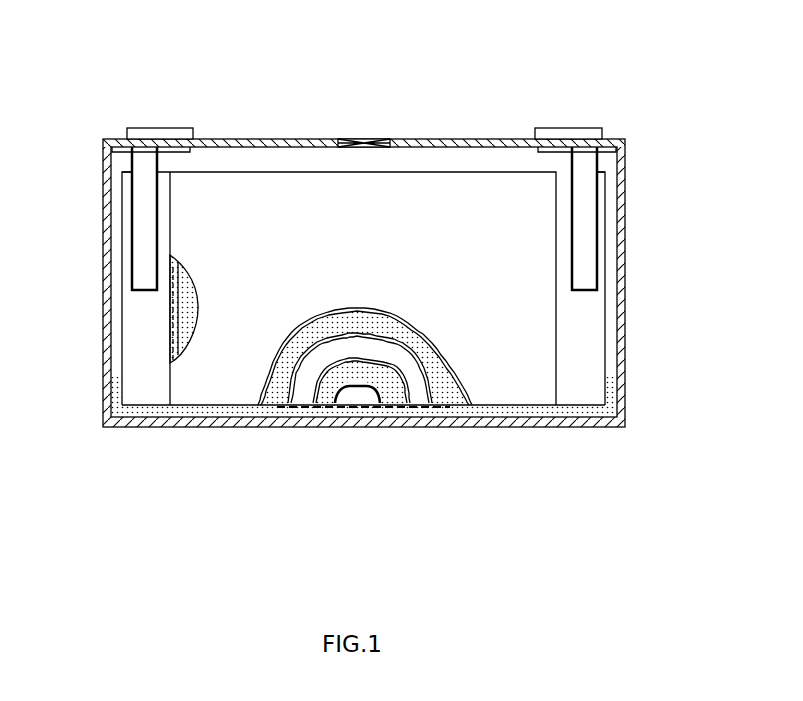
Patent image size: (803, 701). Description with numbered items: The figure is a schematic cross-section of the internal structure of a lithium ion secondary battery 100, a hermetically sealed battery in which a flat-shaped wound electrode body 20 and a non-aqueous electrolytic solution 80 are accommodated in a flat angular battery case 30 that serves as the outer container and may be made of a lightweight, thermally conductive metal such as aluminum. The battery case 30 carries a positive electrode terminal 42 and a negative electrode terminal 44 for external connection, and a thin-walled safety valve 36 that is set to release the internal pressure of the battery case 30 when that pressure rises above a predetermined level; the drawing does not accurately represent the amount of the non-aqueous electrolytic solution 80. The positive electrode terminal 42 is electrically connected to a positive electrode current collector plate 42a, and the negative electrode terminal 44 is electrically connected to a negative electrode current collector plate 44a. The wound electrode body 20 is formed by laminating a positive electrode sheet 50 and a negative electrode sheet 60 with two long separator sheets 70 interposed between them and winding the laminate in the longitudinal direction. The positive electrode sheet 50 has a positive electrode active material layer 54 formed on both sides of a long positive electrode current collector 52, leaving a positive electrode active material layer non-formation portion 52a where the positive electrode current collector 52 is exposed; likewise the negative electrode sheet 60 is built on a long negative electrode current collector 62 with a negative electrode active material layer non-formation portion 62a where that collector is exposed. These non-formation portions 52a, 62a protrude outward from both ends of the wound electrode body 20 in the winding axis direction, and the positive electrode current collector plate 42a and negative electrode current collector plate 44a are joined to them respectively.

The lithium ion secondary battery 100 is at (642, 65).
The wound electrode body 20 is at (287, 171).
The battery case 30 is at (627, 247).
The safety valve 36 is at (373, 138).
The positive electrode terminal 42 is at (172, 128).
The positive electrode current collector plate 42a is at (138, 209).
The negative electrode terminal 44 is at (578, 128).
The negative electrode current collector plate 44a is at (593, 204).
The positive electrode sheet 50 is at (275, 407).
The positive electrode current collector 52 is at (118, 315).
The positive electrode active material layer non-formation portion 52a is at (128, 356).
The positive electrode active material layer 54 is at (198, 285).
The negative electrode sheet 60 is at (332, 397).
The negative electrode current collector 62 is at (612, 315).
The negative electrode active material layer non-formation portion 62a is at (594, 353).
The separator sheet 70 is at (207, 362).
The non-aqueous electrolytic solution 80 is at (525, 410).